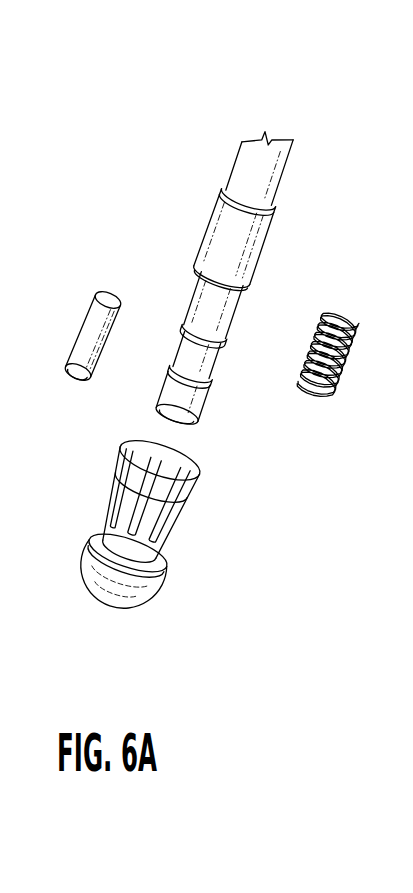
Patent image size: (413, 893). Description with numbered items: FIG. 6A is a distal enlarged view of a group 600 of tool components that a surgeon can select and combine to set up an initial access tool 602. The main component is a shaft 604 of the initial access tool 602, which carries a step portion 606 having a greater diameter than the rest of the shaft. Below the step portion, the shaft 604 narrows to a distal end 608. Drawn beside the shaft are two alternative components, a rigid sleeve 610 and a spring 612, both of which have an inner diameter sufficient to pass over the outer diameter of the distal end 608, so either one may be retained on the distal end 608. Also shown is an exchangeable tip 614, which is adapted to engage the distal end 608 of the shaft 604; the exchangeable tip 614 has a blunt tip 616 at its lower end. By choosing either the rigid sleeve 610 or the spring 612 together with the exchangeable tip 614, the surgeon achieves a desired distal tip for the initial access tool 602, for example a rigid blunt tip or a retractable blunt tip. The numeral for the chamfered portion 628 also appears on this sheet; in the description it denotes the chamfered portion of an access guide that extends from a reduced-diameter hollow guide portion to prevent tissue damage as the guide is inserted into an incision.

The group of tool components 600 is at (134, 186).
The initial access tool 602 is at (232, 160).
The shaft 604 is at (259, 165).
The step portion 606 is at (232, 241).
The distal end 608 is at (198, 350).
The rigid sleeve 610 is at (88, 337).
The spring 612 is at (352, 352).
The exchangeable tip 614 is at (195, 518).
The blunt tip 616 is at (117, 603).
The chamfered portion 628 is at (393, 616).